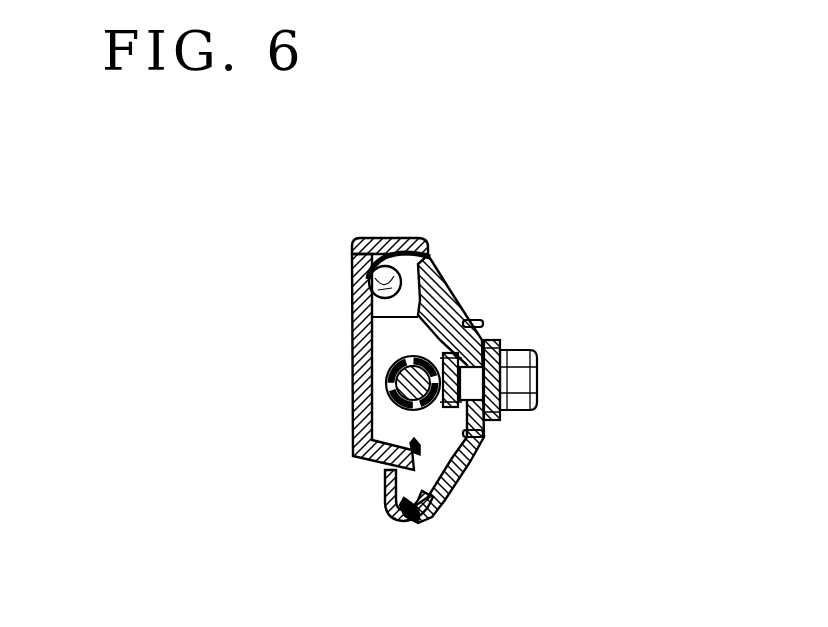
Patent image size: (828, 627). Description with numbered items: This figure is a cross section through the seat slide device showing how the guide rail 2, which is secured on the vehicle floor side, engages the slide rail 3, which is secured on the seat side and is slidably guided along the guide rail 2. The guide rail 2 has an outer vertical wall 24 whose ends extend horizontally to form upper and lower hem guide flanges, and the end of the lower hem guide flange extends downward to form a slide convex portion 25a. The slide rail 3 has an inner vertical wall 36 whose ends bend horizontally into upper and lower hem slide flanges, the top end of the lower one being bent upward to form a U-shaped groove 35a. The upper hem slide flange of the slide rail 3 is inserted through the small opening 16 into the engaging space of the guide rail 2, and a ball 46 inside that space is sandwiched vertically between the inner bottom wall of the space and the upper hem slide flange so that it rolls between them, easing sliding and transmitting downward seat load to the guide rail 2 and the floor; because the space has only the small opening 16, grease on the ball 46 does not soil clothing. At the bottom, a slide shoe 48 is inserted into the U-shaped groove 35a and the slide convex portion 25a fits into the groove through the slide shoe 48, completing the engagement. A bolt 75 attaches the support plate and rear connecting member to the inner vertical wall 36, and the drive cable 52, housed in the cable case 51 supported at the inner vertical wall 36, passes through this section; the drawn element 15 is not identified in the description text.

The guide rail 2 is at (358, 234).
The slide rail 3 is at (447, 272).
The flange portion 15 is at (442, 312).
The opening 16 is at (425, 257).
The outer vertical wall 24 is at (355, 430).
The slide convex portion 25a is at (405, 522).
The U-shaped groove 35a is at (398, 463).
The inner vertical wall 36 is at (486, 329).
The ball 46 is at (369, 285).
The slide shoe 48 is at (428, 521).
The cable case 51 is at (386, 356).
The drive cable 52 is at (387, 387).
The bolt 75 is at (460, 440).